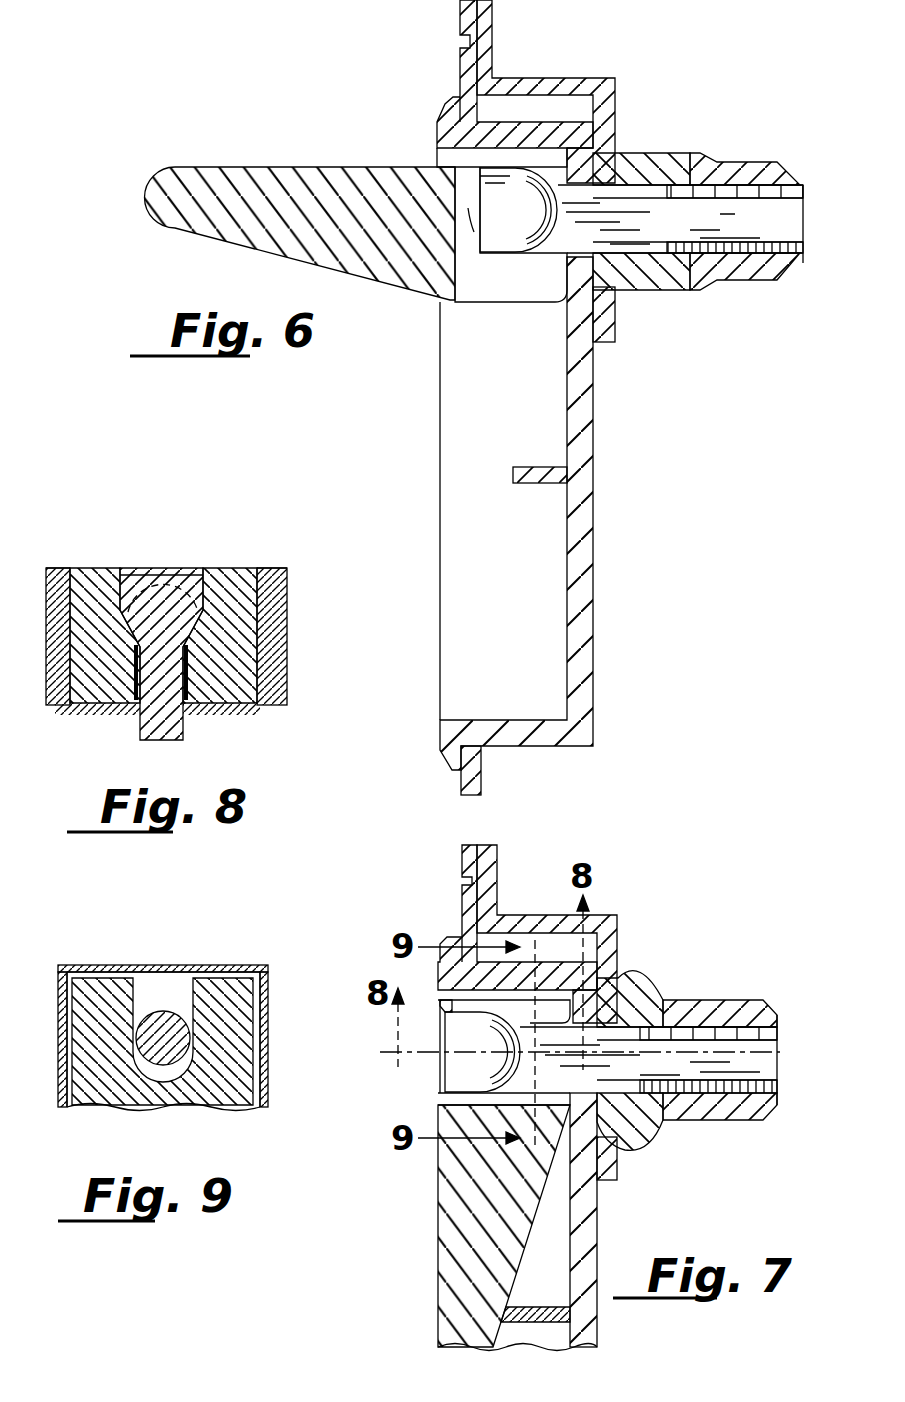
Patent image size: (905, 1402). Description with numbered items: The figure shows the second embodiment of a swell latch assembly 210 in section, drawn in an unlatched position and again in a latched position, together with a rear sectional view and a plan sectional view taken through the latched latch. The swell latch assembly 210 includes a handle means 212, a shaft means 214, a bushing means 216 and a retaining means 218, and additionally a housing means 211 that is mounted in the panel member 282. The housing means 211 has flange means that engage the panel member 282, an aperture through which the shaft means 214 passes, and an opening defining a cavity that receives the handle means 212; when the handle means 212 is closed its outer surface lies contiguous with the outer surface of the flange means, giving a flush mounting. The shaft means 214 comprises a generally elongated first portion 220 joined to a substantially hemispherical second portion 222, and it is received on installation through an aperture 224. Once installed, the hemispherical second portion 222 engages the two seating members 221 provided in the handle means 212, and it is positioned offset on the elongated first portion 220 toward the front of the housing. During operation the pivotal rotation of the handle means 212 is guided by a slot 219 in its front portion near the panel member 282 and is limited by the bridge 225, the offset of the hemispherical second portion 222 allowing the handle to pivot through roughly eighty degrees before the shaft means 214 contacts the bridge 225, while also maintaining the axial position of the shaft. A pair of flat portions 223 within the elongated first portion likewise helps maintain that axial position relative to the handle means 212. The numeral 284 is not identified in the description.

In FIG. 6, the swell latch assembly 210 is at (661, 89).
In FIG. 6, the housing means 211 is at (583, 583).
In FIG. 6, the handle means 212 is at (287, 200).
In FIG. 7, the handle means 212 is at (468, 1278).
In FIG. 6, the shaft means 214 is at (650, 205).
In FIG. 7, the shaft means 214 is at (712, 1112).
In FIG. 6, the bushing means 216 is at (668, 283).
In FIG. 7, the bushing means 216 is at (640, 975).
In FIG. 6, the retaining means 218 is at (757, 277).
In FIG. 7, the retaining means 218 is at (728, 1008).
In FIG. 9, the slot 219 is at (160, 983).
In FIG. 6, the generally elongated first portion 220 is at (623, 218).
In FIG. 8, the seating members 221 is at (190, 645).
In FIG. 6, the substantially hemispherical second portion 222 is at (513, 228).
In FIG. 9, the flat portions 223 is at (200, 1050).
In FIG. 7, the aperture 224 is at (440, 1080).
In FIG. 8, the aperture 224 is at (168, 568).
In FIG. 7, the bridge 225 is at (440, 1003).
In FIG. 6, the panel member 282 is at (458, 66).
In FIG. 7, the panel member 282 is at (467, 895).
In FIG. 6, the bracket 284 is at (543, 82).
In FIG. 7, the bracket 284 is at (492, 880).